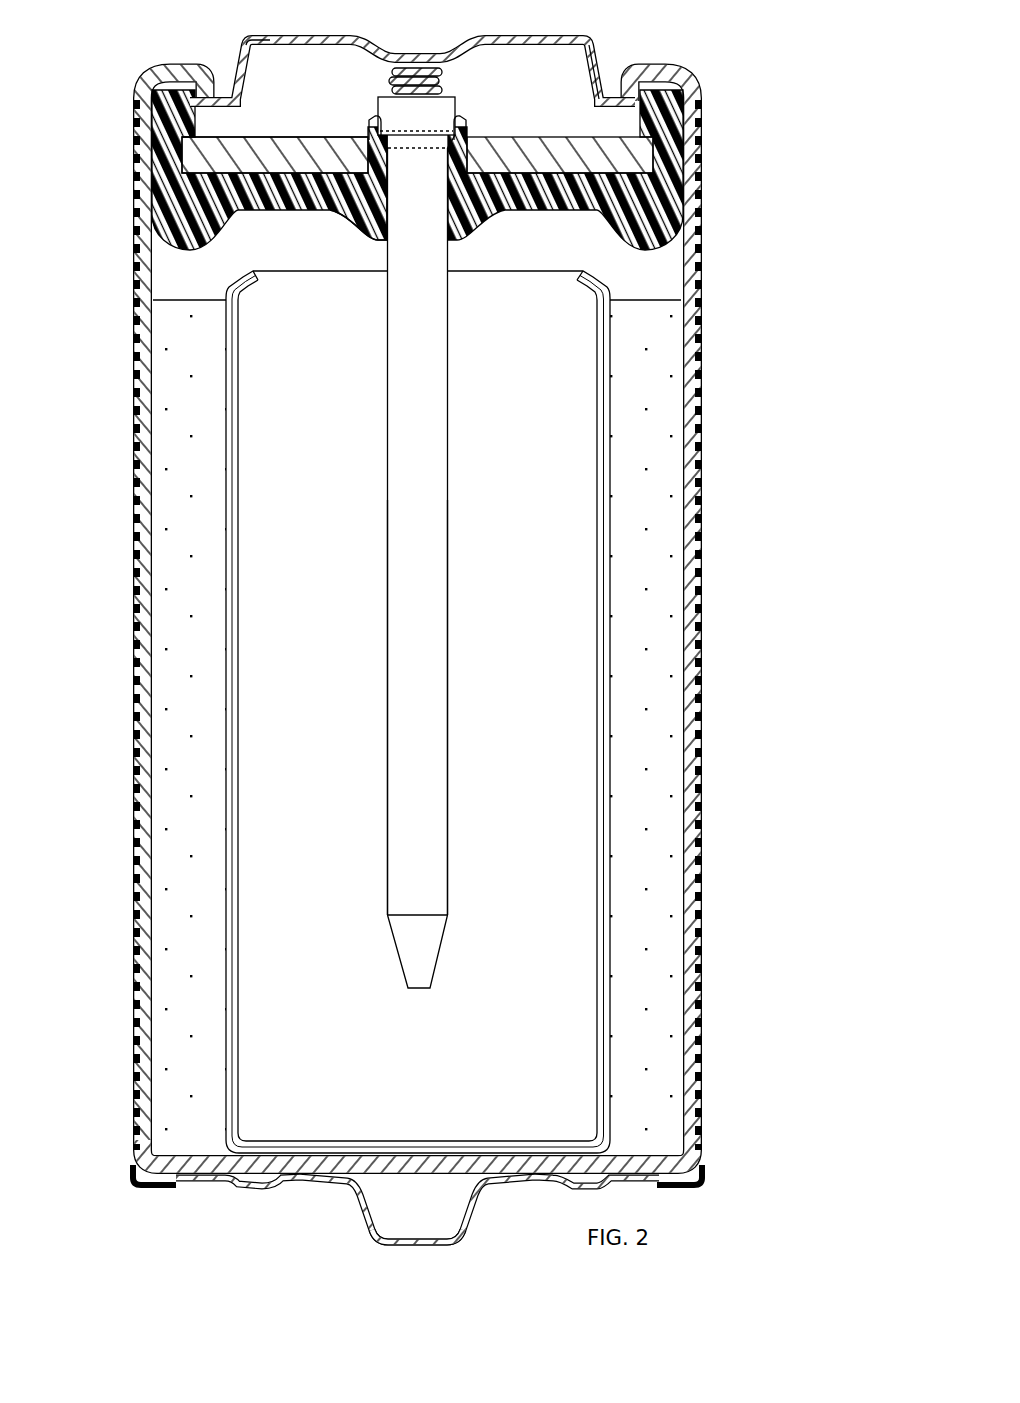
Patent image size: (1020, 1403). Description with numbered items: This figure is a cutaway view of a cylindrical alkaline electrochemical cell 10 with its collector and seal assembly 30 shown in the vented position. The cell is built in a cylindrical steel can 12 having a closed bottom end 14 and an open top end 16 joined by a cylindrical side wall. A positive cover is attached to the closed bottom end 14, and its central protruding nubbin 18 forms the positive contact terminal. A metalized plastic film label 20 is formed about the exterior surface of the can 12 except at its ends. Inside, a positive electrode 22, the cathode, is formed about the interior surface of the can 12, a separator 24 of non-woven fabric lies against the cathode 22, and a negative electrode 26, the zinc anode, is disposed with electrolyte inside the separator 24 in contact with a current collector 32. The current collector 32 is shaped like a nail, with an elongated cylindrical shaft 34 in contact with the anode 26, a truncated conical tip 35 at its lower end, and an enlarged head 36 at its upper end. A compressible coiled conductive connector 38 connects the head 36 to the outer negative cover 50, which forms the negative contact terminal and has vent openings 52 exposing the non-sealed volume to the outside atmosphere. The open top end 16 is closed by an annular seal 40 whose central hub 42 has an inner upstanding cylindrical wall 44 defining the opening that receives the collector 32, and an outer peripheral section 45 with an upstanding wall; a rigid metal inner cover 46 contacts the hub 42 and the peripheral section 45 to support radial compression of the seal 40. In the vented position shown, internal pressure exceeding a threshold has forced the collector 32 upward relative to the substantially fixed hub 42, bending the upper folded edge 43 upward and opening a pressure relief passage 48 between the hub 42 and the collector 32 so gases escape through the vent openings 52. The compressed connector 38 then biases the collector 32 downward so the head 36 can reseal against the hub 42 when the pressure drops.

The electrochemical cell 10 is at (444, 630).
The steel can 12 is at (442, 629).
The closed bottom end 14 is at (417, 1218).
The open top end 16 is at (440, 57).
The protruding nubbin 18 is at (453, 1245).
The film label 20 is at (700, 350).
The positive electrode 22 is at (675, 455).
The separator 24 is at (605, 525).
The negative electrode 26 is at (570, 598).
The collector and seal assembly 30 is at (446, 74).
The current collector 32 is at (567, 568).
The elongated cylindrical shaft 34 is at (432, 692).
The truncated conical tip 35 is at (425, 960).
The enlarged head 36 is at (388, 107).
The coiled conductive connector 38 is at (450, 52).
The seal 40 is at (448, 192).
The central hub 42 is at (338, 130).
The upper edge 43 is at (373, 117).
The inner upstanding cylindrical wall 44 is at (384, 212).
The outer peripheral section 45 is at (683, 153).
The inner cover 46 is at (275, 89).
The pressure relief passage 48 is at (462, 122).
The outer negative cover 50 is at (248, 38).
The vent openings 52 is at (600, 33).